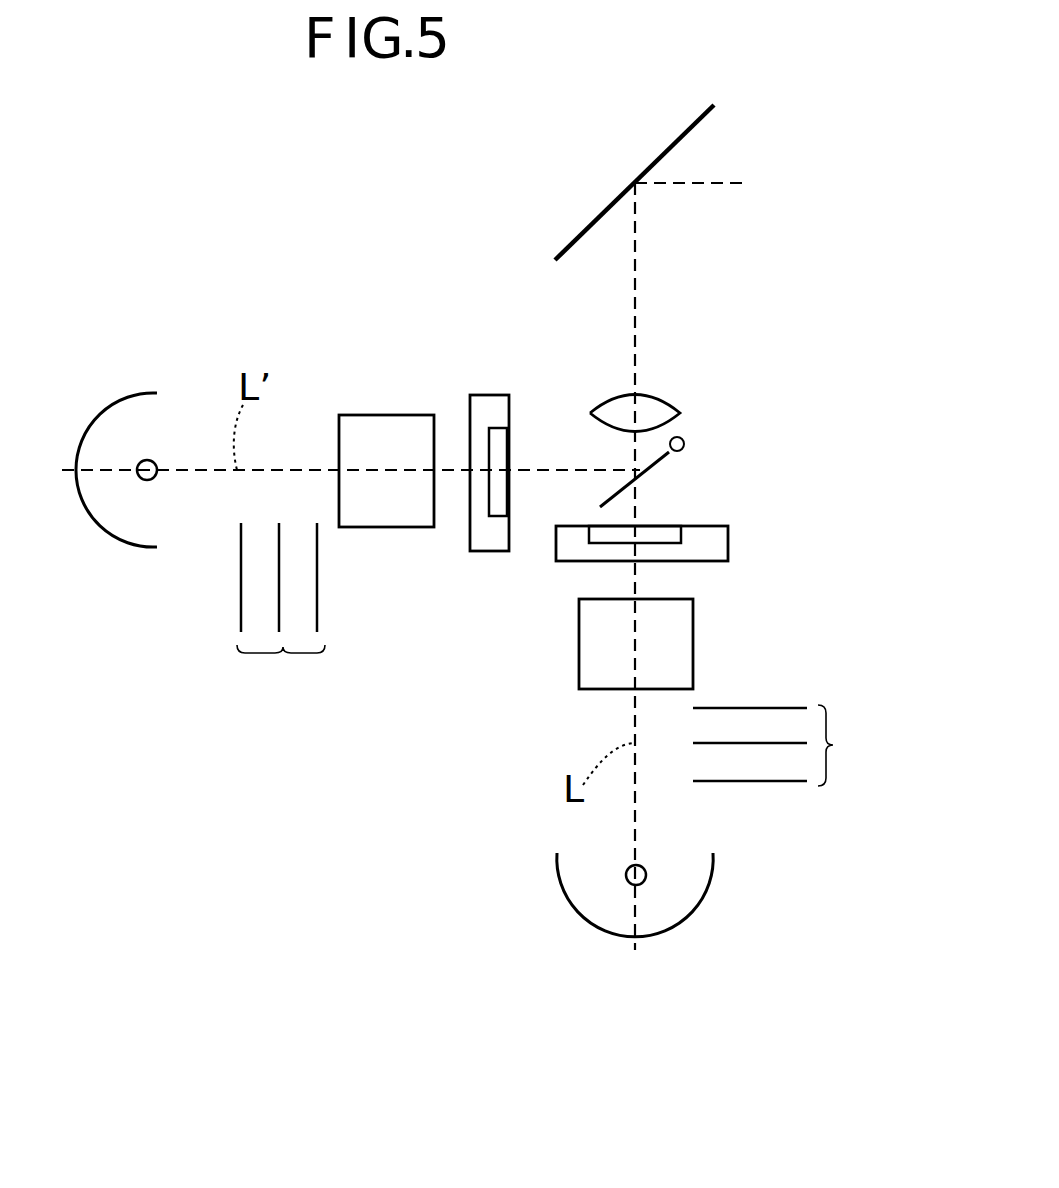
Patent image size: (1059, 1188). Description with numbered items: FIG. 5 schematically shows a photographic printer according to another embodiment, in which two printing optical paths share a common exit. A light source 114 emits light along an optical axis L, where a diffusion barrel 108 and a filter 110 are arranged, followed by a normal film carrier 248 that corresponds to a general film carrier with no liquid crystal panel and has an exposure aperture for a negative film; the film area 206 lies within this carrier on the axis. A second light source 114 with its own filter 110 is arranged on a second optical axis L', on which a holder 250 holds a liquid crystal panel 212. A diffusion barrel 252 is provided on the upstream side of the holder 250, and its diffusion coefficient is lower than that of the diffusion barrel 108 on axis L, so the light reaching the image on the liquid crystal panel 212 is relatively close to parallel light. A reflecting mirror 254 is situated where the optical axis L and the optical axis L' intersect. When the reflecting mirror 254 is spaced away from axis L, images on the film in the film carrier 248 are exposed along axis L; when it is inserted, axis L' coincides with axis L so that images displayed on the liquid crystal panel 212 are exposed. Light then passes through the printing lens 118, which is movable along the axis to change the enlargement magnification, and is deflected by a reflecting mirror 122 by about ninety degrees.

The reflecting mirror 122 is at (692, 122).
The light source 114 is at (143, 558).
The filter 110 is at (280, 658).
The diffusion barrel 252 is at (380, 413).
The holder 250 is at (493, 553).
The liquid crystal panel 212 is at (502, 447).
The printing lens 118 is at (660, 397).
The reflecting mirror 254 is at (660, 470).
The sample 206 is at (668, 533).
The normal film carrier 248 is at (708, 563).
The diffusion barrel 108 is at (693, 628).